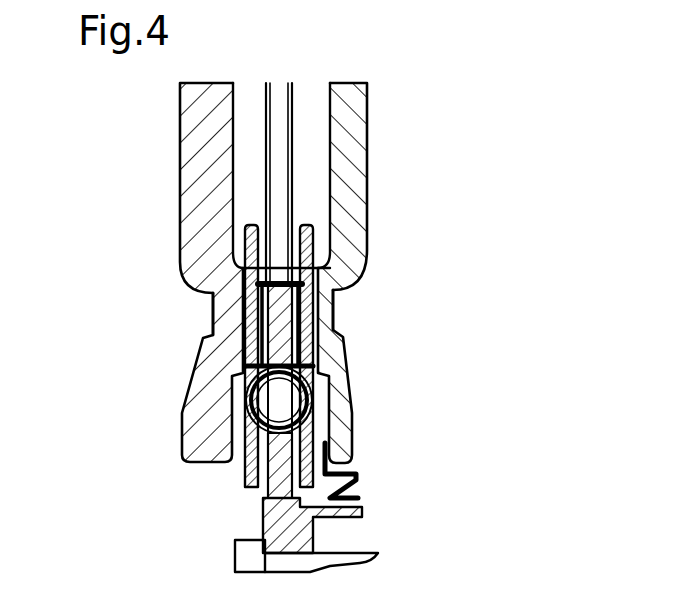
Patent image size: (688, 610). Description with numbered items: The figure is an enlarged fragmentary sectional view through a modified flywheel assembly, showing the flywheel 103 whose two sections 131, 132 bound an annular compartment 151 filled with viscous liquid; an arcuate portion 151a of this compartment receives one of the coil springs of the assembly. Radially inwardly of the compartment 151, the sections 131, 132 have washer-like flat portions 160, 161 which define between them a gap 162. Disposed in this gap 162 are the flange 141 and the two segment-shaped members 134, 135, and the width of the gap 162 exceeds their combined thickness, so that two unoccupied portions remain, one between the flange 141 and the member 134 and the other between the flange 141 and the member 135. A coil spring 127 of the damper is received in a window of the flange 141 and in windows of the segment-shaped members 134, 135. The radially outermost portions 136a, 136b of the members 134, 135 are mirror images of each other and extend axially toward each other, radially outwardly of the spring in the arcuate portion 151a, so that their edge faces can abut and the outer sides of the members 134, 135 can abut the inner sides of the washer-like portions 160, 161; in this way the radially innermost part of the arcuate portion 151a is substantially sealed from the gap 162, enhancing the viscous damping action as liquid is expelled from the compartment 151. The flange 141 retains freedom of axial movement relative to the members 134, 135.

The flywheel 103 is at (271, 188).
The coil spring 127 is at (250, 430).
The section of the flywheel 131 is at (240, 268).
The section of the flywheel 132 is at (352, 222).
The segment-shaped member 134 is at (250, 347).
The segment-shaped member 135 is at (316, 337).
The radially outermost portion of the segment-shaped member 136a is at (246, 266).
The radially outermost portion of the segment-shaped member 136b is at (325, 265).
The flange 141 is at (263, 510).
The annular compartment 151 is at (393, 290).
The arcuate portion of the annular compartment 151a is at (279, 183).
The washer-like flat portion 160 is at (212, 293).
The washer-like flat portion 161 is at (335, 290).
The gap 162 is at (352, 383).